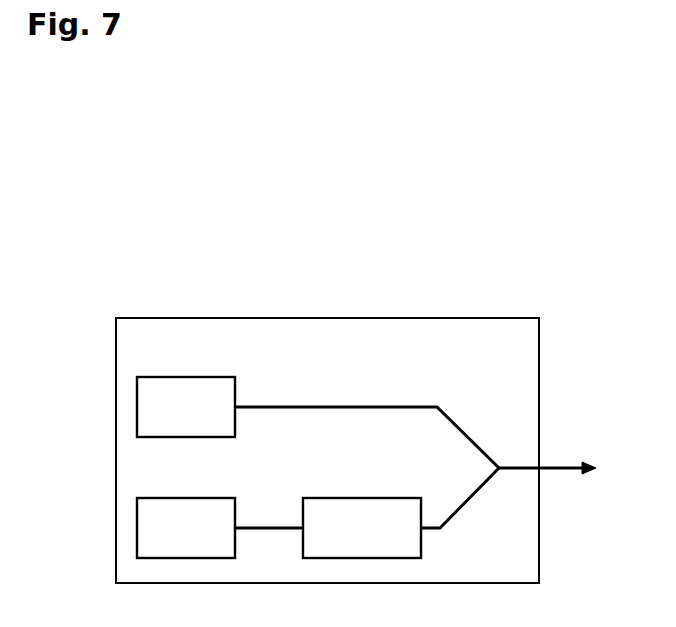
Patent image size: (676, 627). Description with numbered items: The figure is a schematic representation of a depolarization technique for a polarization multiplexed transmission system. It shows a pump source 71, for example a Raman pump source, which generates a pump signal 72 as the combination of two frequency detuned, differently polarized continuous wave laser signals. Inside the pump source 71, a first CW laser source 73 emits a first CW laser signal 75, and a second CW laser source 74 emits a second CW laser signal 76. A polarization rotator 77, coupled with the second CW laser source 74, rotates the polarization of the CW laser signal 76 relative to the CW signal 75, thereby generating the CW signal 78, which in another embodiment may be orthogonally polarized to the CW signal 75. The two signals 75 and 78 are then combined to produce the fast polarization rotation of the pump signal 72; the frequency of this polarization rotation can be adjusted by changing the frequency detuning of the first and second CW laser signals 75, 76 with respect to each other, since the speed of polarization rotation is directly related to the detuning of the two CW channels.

The pump source 71 is at (179, 318).
The pump signal 72 is at (580, 473).
The first CW laser source 73 is at (167, 377).
The second CW laser source 74 is at (172, 498).
The first CW laser signal 75 is at (482, 407).
The second CW laser signal 76 is at (284, 529).
The polarization rotator 77 is at (363, 498).
The rotated CW laser signal 78 is at (488, 526).